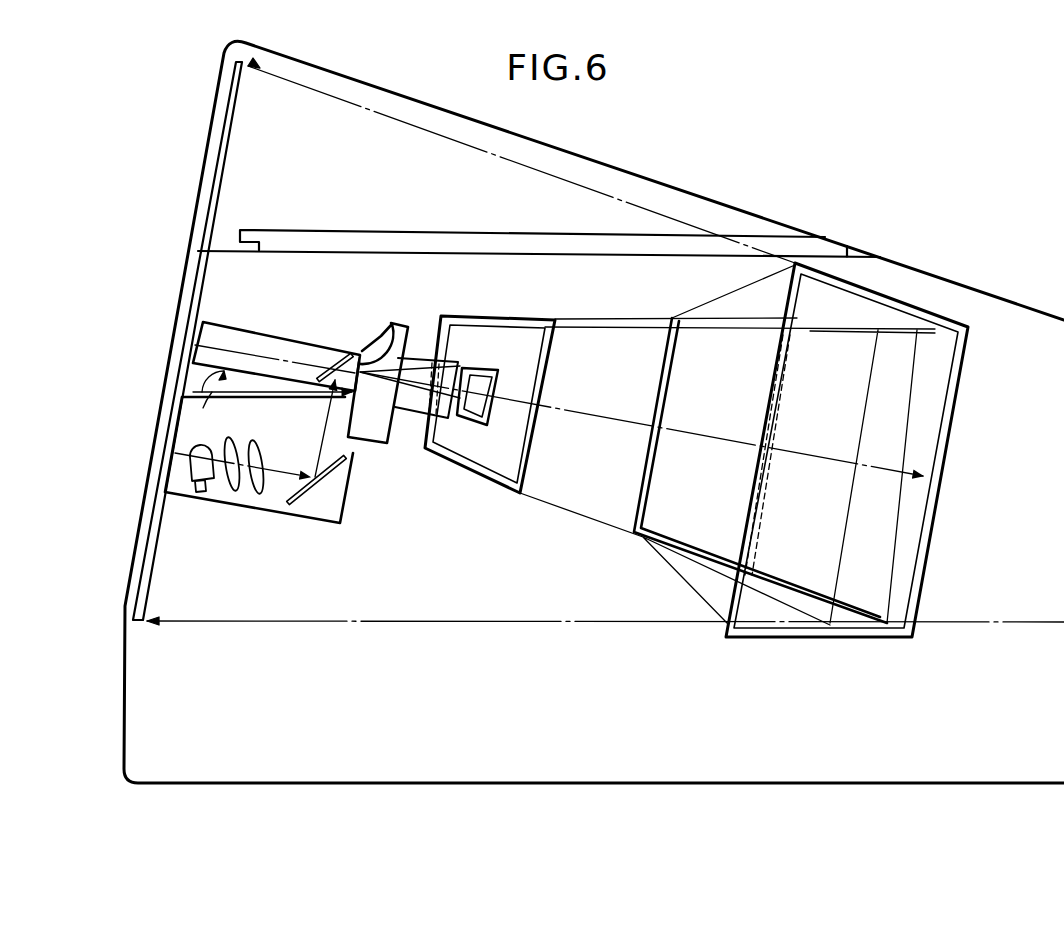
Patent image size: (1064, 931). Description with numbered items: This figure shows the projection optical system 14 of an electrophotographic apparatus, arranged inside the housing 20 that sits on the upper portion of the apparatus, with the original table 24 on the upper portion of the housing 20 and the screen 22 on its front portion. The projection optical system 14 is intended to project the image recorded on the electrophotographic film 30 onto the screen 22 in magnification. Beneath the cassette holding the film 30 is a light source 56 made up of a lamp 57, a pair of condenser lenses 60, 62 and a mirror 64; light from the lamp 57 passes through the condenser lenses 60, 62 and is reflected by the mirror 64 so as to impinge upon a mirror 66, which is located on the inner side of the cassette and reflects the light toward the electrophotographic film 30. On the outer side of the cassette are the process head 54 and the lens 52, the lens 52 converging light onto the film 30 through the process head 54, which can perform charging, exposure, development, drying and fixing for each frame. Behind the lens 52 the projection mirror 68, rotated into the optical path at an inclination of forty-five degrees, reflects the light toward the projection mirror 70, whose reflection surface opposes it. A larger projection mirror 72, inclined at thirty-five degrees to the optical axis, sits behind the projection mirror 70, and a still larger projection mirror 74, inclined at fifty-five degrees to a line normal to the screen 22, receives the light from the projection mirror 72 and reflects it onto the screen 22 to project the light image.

The projection optical system 14 is at (460, 540).
The housing 20 is at (985, 290).
The screen 22 is at (150, 527).
The original table 24 is at (775, 248).
The electrophotographic film 30 is at (395, 323).
The lens 52 is at (402, 412).
The process head 54 is at (380, 333).
The light source 56 is at (240, 518).
The lamp 57 is at (187, 470).
The condenser lens 60 is at (233, 445).
The condenser lens 62 is at (265, 445).
The mirror 64 is at (297, 506).
The mirror 66 is at (338, 352).
The projection mirror 68 is at (475, 414).
The projection mirror 70 is at (507, 474).
The projection mirror 72 is at (652, 523).
The projection mirror 74 is at (940, 376).